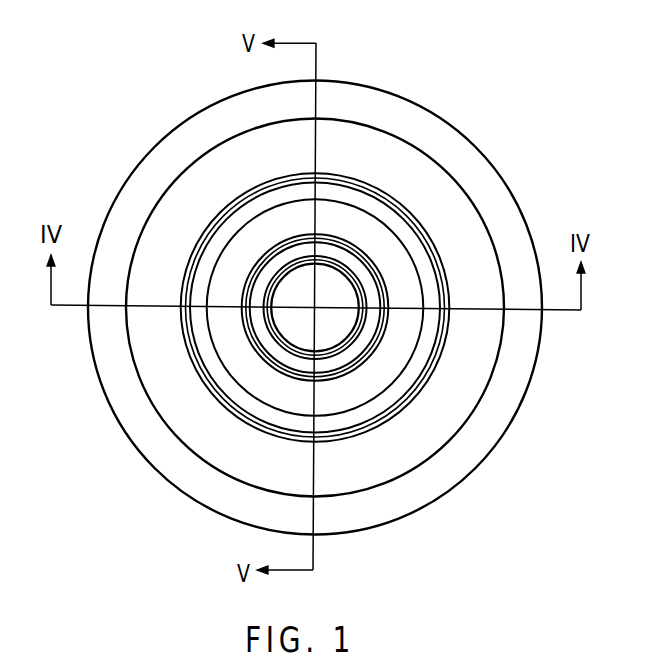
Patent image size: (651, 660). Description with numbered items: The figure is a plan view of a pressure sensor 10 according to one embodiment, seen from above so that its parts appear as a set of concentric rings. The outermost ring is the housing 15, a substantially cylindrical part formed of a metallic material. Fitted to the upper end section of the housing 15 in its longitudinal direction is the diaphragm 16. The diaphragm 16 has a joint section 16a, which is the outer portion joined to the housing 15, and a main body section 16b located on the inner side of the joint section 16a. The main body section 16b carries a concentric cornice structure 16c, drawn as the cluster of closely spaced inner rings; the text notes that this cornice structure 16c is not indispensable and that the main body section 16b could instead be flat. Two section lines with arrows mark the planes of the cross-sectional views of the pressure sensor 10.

The pressure sensor 10 is at (330, 276).
The housing 15 is at (497, 453).
The diaphragm 16 is at (330, 284).
The joint section 16a is at (180, 150).
The main body section 16b is at (243, 162).
The cornice structure 16c is at (298, 280).